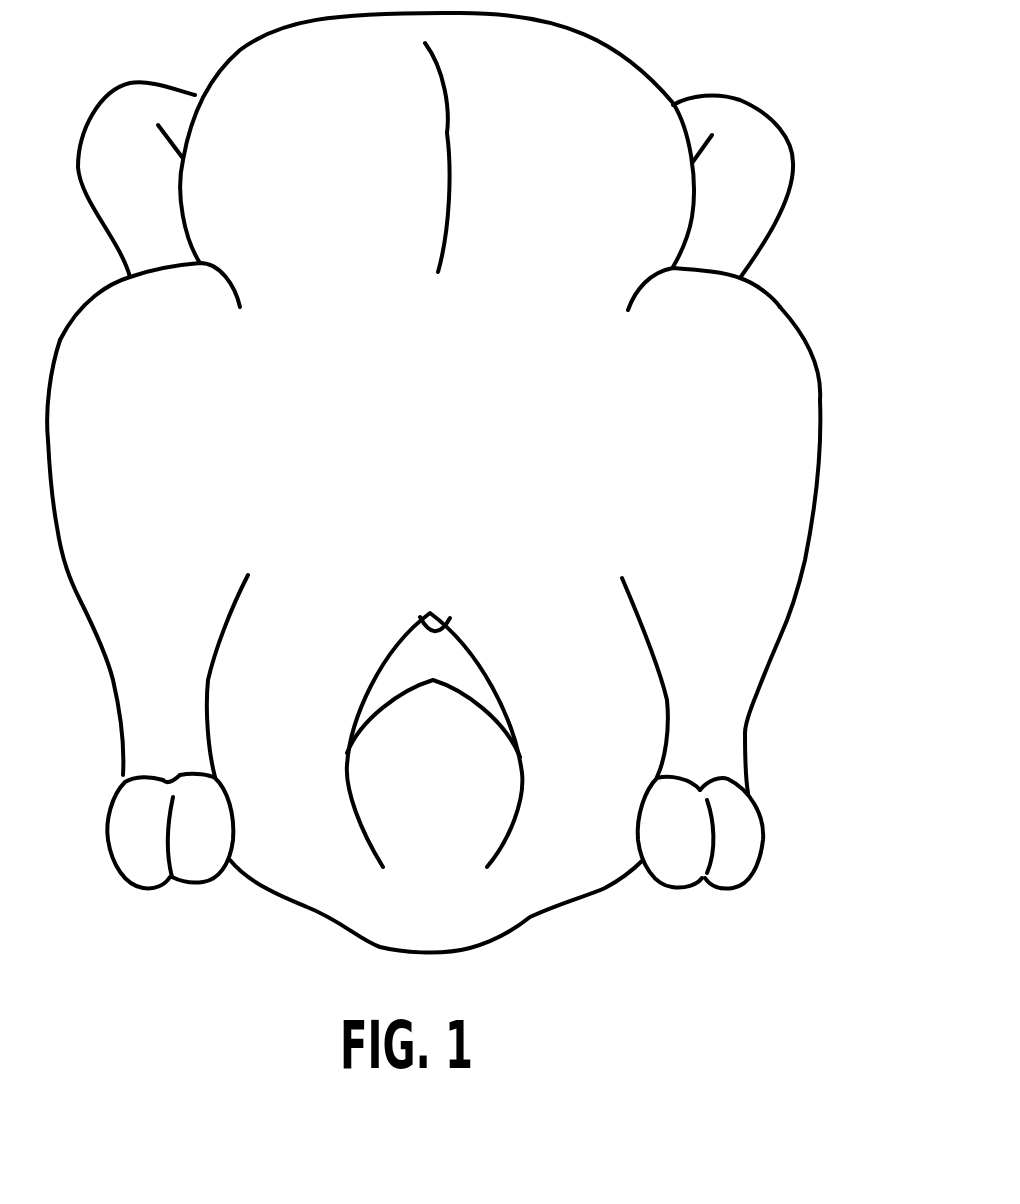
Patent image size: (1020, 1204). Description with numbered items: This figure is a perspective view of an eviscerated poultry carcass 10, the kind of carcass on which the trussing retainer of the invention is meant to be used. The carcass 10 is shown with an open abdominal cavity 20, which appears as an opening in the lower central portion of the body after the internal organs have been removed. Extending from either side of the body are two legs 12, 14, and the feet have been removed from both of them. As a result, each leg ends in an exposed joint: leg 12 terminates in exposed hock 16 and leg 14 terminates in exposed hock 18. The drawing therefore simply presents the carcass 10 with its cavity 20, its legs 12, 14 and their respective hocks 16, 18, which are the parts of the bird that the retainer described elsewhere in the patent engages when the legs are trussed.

The eviscerated poultry carcass 10 is at (757, 333).
The leg 12 is at (120, 763).
The leg 14 is at (747, 737).
The hock 16 is at (187, 883).
The hock 18 is at (707, 880).
The open abdominal cavity 20 is at (452, 617).